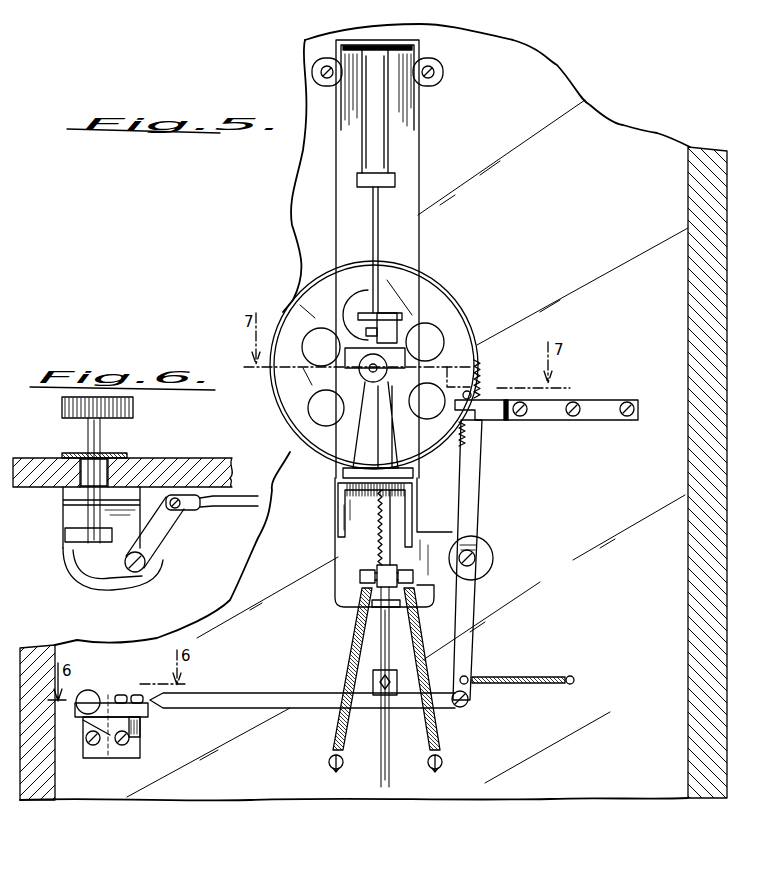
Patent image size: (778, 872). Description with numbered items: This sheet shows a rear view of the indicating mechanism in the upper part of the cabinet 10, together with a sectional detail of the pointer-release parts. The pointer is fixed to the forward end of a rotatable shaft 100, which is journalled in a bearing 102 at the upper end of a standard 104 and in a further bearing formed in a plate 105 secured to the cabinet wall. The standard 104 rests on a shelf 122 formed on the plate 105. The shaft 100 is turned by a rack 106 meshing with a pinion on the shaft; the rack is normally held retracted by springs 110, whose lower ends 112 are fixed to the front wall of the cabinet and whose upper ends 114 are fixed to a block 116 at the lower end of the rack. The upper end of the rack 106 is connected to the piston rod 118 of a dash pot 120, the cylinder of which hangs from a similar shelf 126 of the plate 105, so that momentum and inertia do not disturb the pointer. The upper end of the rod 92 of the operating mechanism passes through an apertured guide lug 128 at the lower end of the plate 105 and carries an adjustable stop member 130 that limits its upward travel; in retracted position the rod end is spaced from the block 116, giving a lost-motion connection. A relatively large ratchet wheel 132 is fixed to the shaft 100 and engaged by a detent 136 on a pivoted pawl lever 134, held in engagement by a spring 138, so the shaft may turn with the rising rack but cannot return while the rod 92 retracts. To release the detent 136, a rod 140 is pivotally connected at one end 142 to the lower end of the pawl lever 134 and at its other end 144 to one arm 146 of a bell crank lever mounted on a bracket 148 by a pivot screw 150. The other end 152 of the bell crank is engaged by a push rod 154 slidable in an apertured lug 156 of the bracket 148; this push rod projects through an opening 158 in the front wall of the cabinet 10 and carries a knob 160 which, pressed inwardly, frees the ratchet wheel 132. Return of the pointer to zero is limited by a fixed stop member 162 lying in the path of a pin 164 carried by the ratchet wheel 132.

In FIG. 6, the cabinet 10 is at (193, 459).
In FIG. 5, the rod 92 is at (380, 768).
In FIG. 5, the rotatable shaft 100 is at (361, 372).
In FIG. 5, the bearing 102 is at (368, 378).
In FIG. 5, the standard 104 is at (366, 422).
In FIG. 5, the plate 105 is at (323, 226).
In FIG. 5, the rack 106 is at (394, 343).
In FIG. 5, the springs 110 is at (334, 731).
In FIG. 5, the lower ends of springs 112 is at (328, 762).
In FIG. 5, the upper ends of springs 114 is at (364, 578).
In FIG. 5, the block 116 is at (376, 567).
In FIG. 5, the piston rod 118 is at (371, 231).
In FIG. 5, the dash pot 120 is at (402, 157).
In FIG. 5, the shelf 122 is at (336, 497).
In FIG. 5, the shelf 126 is at (418, 50).
In FIG. 5, the apertured guide lug 128 is at (371, 608).
In FIG. 5, the adjustable stop member 130 is at (373, 680).
In FIG. 5, the ratchet wheel 132 is at (440, 292).
In FIG. 5, the pawl lever 134 is at (473, 512).
In FIG. 5, the detent 136 is at (473, 422).
In FIG. 5, the spring 138 is at (522, 677).
In FIG. 5, the rod 140 is at (240, 693).
In FIG. 6, the rod 140 is at (229, 509).
In FIG. 5, the pivotal connection 142 is at (470, 700).
In FIG. 6, the pivotal connection 144 is at (183, 511).
In FIG. 6, the arm of bell crank lever 146 is at (165, 537).
In FIG. 5, the bracket 148 is at (141, 736).
In FIG. 6, the bracket 148 is at (144, 584).
In FIG. 5, the pivot screw 150 is at (121, 695).
In FIG. 6, the pivot screw 150 is at (150, 569).
In FIG. 5, the end of bell crank lever 152 is at (88, 710).
In FIG. 6, the end of bell crank lever 152 is at (95, 563).
In FIG. 6, the push rod 154 is at (88, 515).
In FIG. 5, the apertured lug 156 is at (89, 691).
In FIG. 6, the apertured lug 156 is at (70, 537).
In FIG. 6, the opening 158 is at (127, 456).
In FIG. 6, the knob 160 is at (134, 407).
In FIG. 5, the fixed stop member 162 is at (460, 428).
In FIG. 5, the pin 164 is at (478, 396).